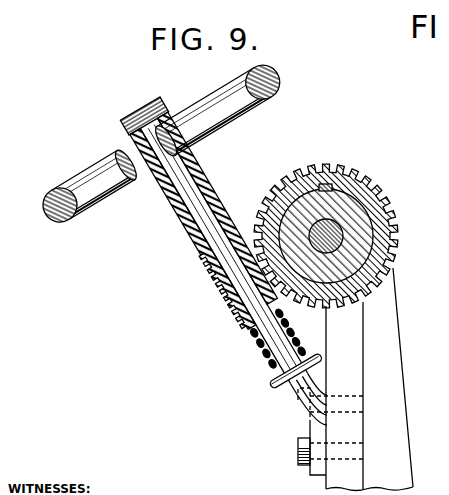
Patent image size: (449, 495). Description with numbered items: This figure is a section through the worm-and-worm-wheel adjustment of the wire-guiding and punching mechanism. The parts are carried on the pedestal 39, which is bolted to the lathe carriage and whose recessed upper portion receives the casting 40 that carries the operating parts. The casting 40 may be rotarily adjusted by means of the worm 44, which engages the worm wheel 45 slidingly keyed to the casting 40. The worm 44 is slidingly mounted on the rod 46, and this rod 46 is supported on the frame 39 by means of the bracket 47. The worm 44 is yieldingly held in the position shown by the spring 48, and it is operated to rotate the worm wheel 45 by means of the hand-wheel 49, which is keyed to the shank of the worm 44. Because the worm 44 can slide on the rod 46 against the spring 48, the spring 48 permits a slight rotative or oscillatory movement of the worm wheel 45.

The pedestal 39 is at (381, 353).
The casting 40 is at (360, 228).
The worm 44 is at (215, 276).
The worm wheel 45 is at (343, 172).
The rod 46 is at (192, 192).
The bracket 47 is at (318, 445).
The spring 48 is at (268, 358).
The hand-wheel 49 is at (55, 188).